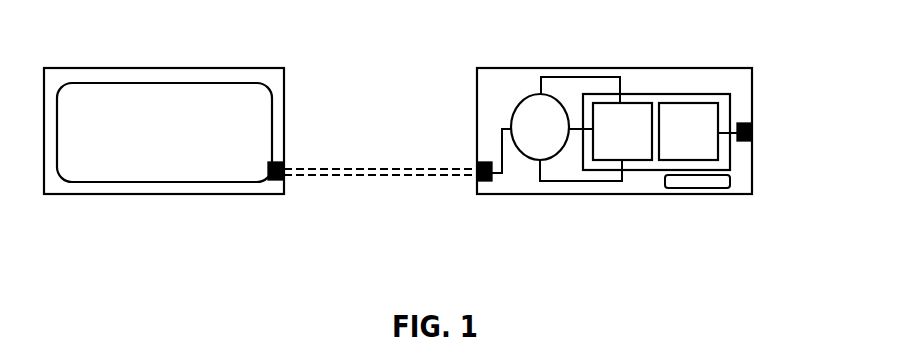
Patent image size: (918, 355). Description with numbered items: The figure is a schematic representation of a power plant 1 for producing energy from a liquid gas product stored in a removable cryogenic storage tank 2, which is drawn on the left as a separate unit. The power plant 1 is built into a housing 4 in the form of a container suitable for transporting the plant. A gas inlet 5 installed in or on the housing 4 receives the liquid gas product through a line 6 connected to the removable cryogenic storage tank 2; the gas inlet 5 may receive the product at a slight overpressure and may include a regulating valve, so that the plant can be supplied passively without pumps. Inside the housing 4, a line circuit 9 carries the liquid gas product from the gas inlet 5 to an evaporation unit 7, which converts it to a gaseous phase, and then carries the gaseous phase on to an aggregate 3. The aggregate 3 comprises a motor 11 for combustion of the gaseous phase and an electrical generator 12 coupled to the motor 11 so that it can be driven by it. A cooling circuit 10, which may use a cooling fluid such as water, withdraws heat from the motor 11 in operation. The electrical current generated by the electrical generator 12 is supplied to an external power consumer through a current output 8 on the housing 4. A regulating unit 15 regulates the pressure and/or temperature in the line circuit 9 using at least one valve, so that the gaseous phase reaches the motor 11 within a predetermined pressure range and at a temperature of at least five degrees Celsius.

The power plant 1 is at (461, 56).
The removable cryogenic storage tank 2 is at (275, 100).
The aggregate 3 is at (697, 93).
The housing 4 is at (628, 67).
The gas inlet 5 is at (477, 179).
The line 6 is at (397, 176).
The evaporation unit 7 is at (548, 140).
The current output 8 is at (752, 133).
The line circuit 9 is at (557, 188).
The cooling circuit 10 is at (561, 77).
The motor 11 is at (609, 138).
The electrical generator 12 is at (674, 138).
The regulating unit 15 is at (733, 183).